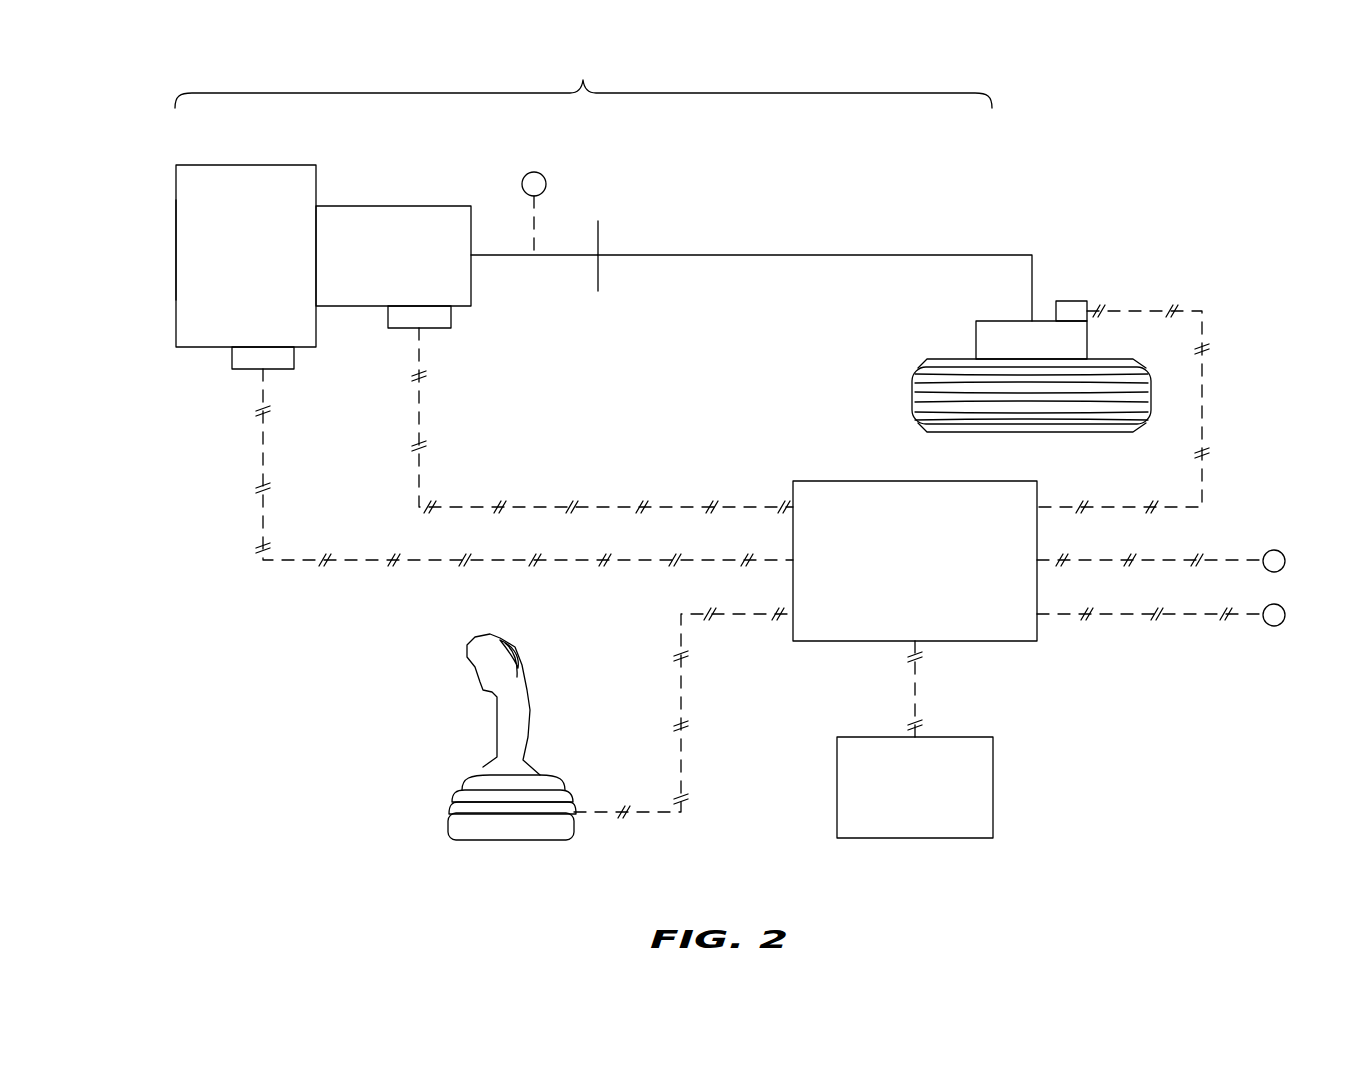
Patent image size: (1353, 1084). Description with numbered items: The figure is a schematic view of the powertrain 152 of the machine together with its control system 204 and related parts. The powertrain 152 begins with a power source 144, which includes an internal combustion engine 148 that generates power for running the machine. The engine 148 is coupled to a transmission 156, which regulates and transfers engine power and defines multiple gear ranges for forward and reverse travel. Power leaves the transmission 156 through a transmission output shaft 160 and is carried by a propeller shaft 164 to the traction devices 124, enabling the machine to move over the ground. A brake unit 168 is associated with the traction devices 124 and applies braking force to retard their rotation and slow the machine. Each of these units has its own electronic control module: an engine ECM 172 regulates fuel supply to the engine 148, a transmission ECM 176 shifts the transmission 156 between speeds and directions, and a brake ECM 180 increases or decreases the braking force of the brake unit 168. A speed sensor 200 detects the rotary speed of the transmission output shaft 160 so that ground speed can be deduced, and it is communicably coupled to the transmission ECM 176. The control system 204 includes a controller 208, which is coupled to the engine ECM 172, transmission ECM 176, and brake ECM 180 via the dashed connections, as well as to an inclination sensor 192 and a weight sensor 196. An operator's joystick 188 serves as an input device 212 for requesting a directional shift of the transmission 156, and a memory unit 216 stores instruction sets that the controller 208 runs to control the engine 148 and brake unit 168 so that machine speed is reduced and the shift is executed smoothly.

The traction devices 124 is at (935, 367).
The power source 144 is at (176, 185).
The engine 148 is at (176, 212).
The powertrain 152 is at (583, 79).
The transmission 156 is at (413, 206).
The transmission output shaft 160 is at (515, 257).
The propeller shaft 164 is at (777, 255).
The brake unit 168 is at (976, 333).
The engine ECM 172 is at (232, 358).
The transmission ECM 176 is at (451, 318).
The brake ECM 180 is at (1082, 301).
The joystick 188 is at (620, 724).
The inclination sensor 192 is at (1282, 554).
The weight sensor 196 is at (1282, 624).
The speed sensor 200 is at (545, 175).
The control system 204 is at (897, 520).
The controller 208 is at (880, 481).
The input device 212 is at (520, 672).
The memory unit 216 is at (975, 737).